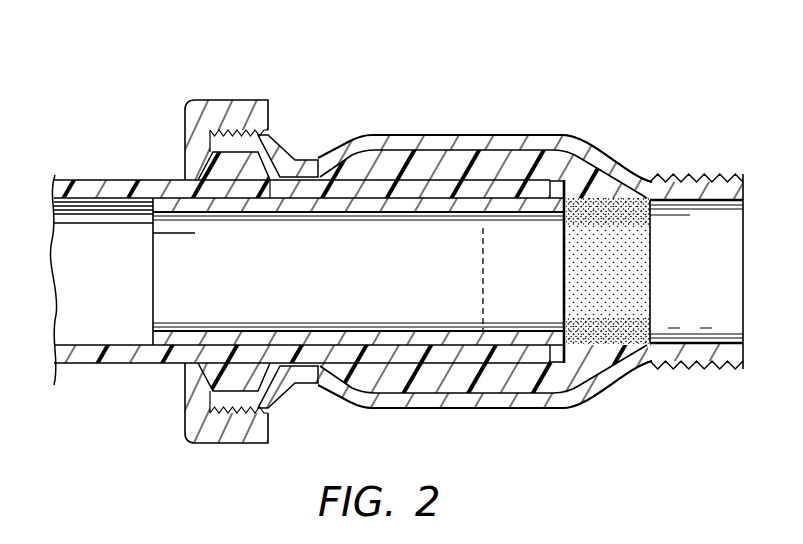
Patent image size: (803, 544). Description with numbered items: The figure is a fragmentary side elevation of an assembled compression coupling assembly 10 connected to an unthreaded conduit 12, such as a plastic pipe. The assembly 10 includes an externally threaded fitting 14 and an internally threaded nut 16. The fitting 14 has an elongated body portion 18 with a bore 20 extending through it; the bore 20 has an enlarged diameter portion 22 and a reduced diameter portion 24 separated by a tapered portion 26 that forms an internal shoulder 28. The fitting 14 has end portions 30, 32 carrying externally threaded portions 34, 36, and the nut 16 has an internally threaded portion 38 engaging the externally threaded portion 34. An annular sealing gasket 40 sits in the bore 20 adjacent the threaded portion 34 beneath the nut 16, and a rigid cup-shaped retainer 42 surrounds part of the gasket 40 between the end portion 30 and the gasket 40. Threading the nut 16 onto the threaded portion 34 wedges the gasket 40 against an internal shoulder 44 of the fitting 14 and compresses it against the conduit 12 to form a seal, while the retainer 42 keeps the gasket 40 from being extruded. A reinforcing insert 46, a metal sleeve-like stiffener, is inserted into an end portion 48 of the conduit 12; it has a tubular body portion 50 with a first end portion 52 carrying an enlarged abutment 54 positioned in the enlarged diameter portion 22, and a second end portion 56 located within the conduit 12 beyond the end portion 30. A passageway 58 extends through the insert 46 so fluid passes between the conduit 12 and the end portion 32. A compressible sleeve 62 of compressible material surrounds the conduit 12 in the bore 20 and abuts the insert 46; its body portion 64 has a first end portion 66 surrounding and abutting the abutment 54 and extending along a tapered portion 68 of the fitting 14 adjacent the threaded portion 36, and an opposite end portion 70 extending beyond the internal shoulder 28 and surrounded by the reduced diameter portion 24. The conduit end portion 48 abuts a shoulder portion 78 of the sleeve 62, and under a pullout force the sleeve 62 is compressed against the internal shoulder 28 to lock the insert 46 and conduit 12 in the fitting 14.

The compression coupling assembly 10 is at (195, 50).
The conduit 12 is at (78, 178).
The fitting 14 is at (424, 133).
The nut 16 is at (238, 98).
The body portion 18 is at (470, 135).
The bore 20 is at (380, 135).
The enlarged diameter portion 22 is at (548, 150).
The reduced diameter portion 24 is at (302, 172).
The tapered portion 26 is at (345, 393).
The internal shoulder 28 is at (368, 394).
The end portion 30 is at (222, 140).
The end portion 32 is at (698, 175).
The externally threaded portion 34 is at (213, 393).
The externally threaded portion 36 is at (707, 370).
The internally threaded portion 38 is at (249, 410).
The annular sealing gasket 40 is at (210, 168).
The cup-shaped retainer 42 is at (213, 380).
The internal shoulder 44 is at (266, 190).
The reinforcing insert 46 is at (152, 272).
The end portion 48 is at (438, 356).
The tubular body portion 50 is at (381, 206).
The first end portion 52 is at (557, 200).
The abutment 54 is at (557, 194).
The second end portion 56 is at (168, 204).
The passageway 58 is at (347, 279).
The compressible sleeve 62 is at (591, 334).
The body portion 64 is at (497, 387).
The first end portion 66 is at (600, 368).
The tapered portion 68 is at (583, 396).
The end portion 70 is at (320, 370).
The shoulder portion 78 is at (498, 190).